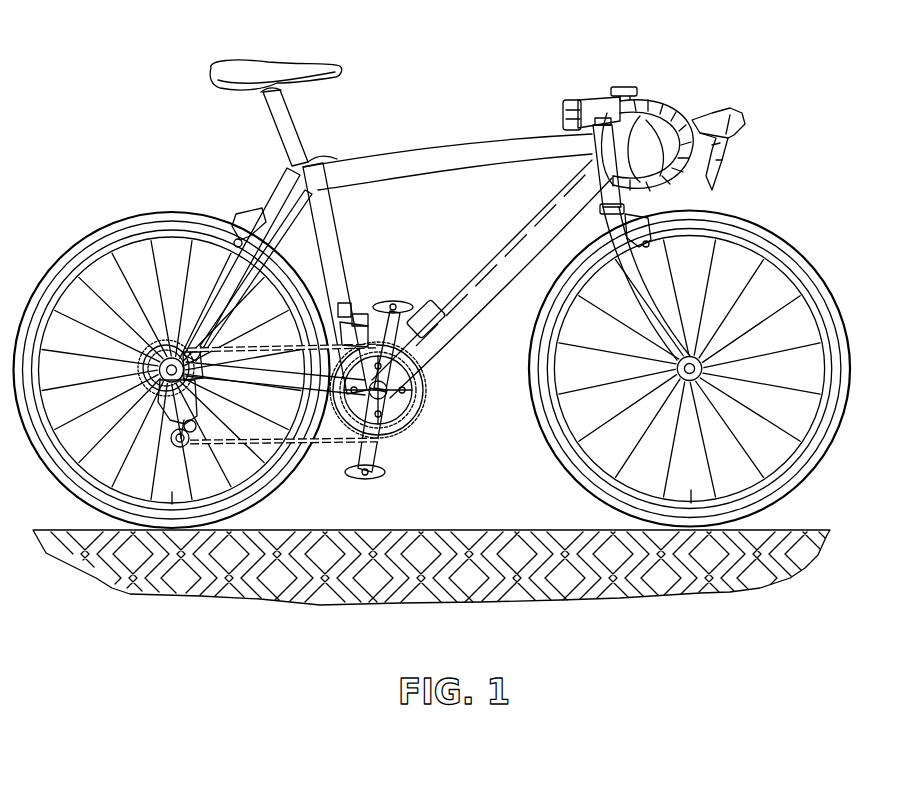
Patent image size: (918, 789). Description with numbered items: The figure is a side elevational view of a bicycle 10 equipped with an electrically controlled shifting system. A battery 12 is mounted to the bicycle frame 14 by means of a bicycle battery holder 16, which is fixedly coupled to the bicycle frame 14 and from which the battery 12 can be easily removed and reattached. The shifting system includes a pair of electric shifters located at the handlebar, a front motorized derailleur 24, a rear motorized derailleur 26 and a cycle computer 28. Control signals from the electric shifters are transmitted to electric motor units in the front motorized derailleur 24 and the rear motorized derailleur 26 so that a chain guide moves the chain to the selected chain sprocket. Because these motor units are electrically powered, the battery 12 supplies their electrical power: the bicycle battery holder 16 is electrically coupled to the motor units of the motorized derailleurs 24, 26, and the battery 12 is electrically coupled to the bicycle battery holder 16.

The bicycle 10 is at (444, 275).
The battery 12 is at (433, 302).
The bicycle frame 14 is at (432, 138).
The bicycle battery holder 16 is at (436, 340).
The front motorized derailleur 24 is at (366, 308).
The rear motorized derailleur 26 is at (172, 458).
The cycle computer 28 is at (622, 87).